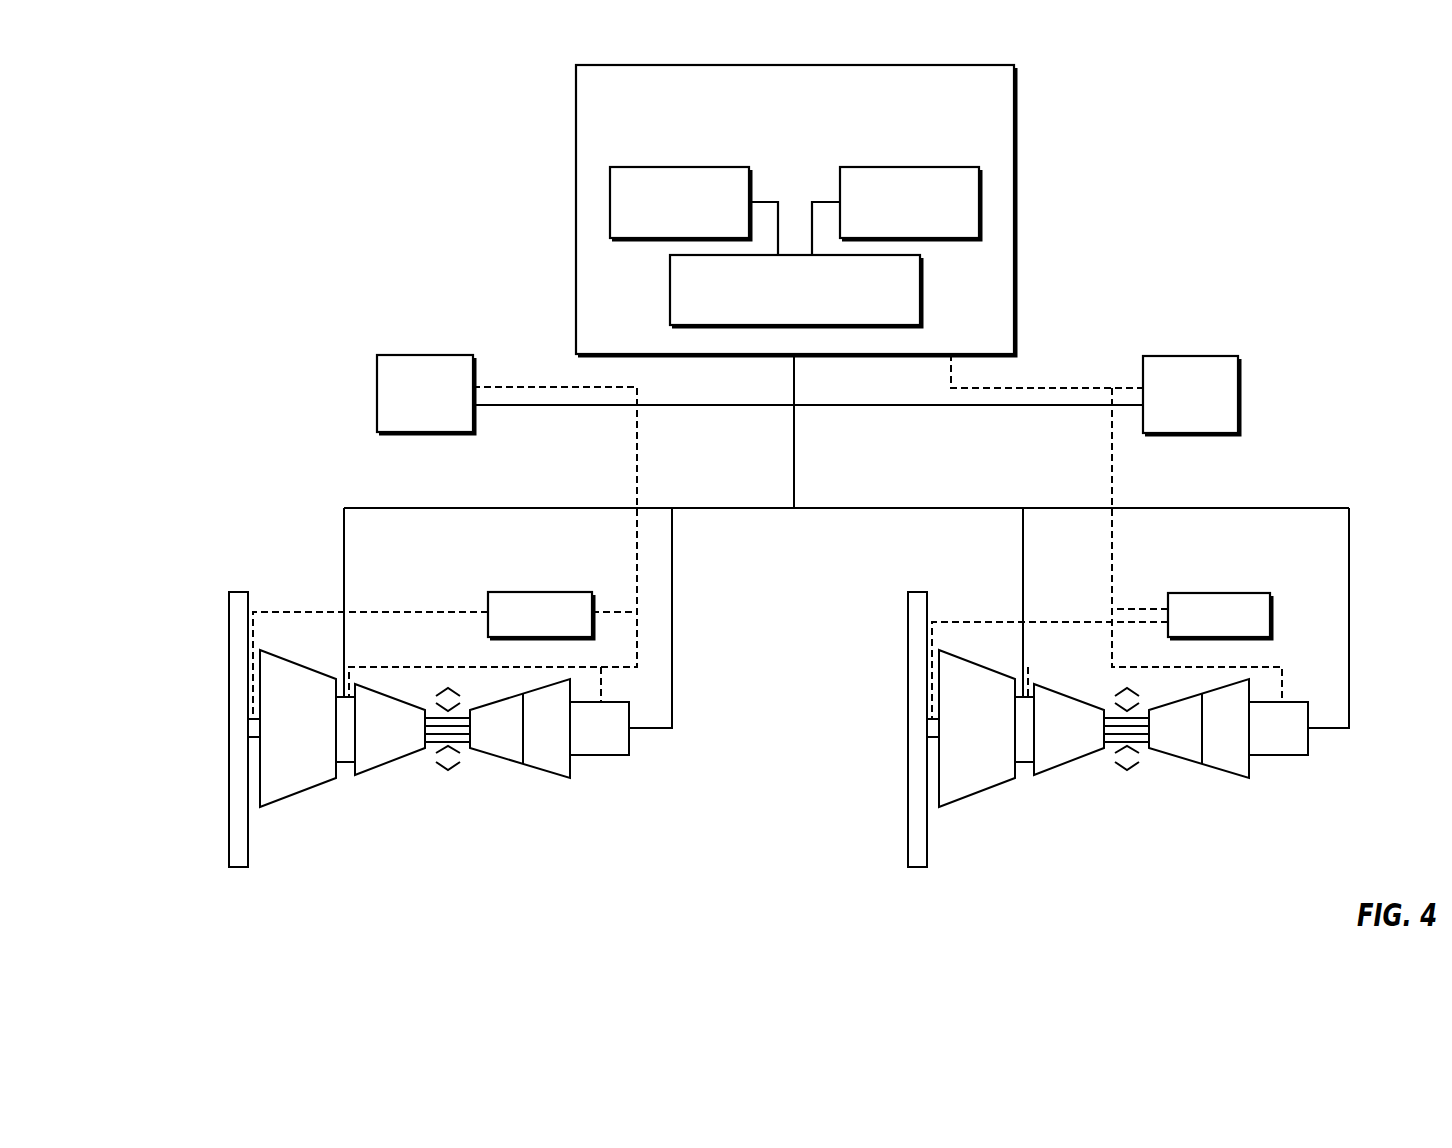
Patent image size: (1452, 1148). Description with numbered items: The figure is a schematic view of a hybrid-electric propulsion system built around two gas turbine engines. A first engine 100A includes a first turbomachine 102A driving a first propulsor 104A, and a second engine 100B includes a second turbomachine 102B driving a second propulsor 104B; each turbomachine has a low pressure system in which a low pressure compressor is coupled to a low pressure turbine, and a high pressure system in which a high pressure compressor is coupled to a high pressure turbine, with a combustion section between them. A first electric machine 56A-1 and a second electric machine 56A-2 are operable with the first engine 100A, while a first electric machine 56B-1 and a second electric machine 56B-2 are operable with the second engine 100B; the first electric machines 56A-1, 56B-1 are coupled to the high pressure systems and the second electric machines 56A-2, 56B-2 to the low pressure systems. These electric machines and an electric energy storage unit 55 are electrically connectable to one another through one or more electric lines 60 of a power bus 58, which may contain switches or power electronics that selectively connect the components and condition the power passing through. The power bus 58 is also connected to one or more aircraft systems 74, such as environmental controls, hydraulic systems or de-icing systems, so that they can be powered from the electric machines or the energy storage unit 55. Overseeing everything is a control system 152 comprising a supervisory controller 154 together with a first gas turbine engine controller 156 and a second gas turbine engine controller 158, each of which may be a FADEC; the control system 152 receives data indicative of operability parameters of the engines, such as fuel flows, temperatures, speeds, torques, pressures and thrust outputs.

The supervisory controller 154 is at (1015, 108).
The control system 152 is at (410, 230).
The electric energy storage unit 55 is at (411, 409).
The aircraft systems 74 is at (1204, 410).
The power bus 58 is at (934, 466).
The electric lines 60 is at (838, 508).
The first gas turbine engine controller 156 is at (532, 590).
The second gas turbine engine controller 158 is at (1211, 591).
The first engine 100A is at (383, 769).
The second engine 100B is at (1066, 769).
The first turbomachine 102A is at (446, 785).
The second turbomachine 102B is at (1128, 785).
The first propulsor 104A is at (192, 851).
The second propulsor 104B is at (877, 769).
The first electric machine 56A-1 is at (348, 750).
The second electric machine 56A-2 is at (597, 743).
The first electric machine 56B-1 is at (1013, 775).
The second electric machine 56B-2 is at (1283, 766).